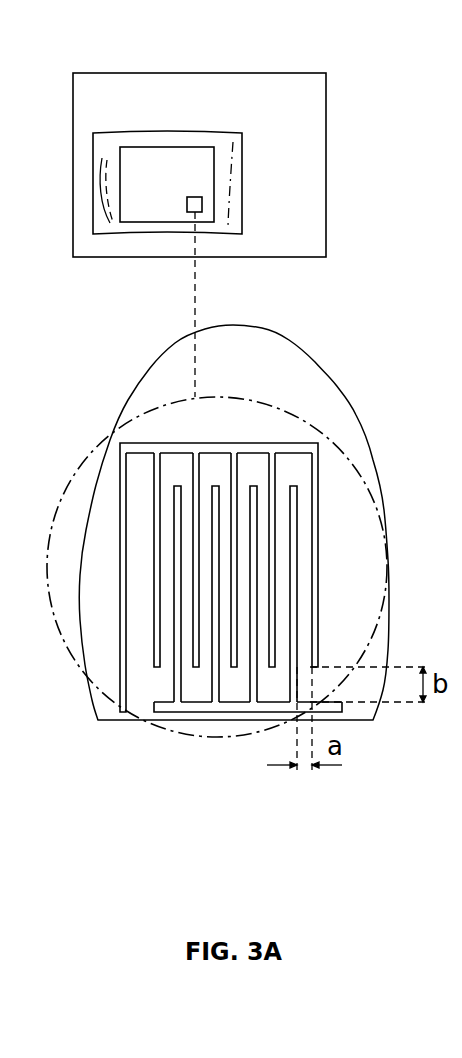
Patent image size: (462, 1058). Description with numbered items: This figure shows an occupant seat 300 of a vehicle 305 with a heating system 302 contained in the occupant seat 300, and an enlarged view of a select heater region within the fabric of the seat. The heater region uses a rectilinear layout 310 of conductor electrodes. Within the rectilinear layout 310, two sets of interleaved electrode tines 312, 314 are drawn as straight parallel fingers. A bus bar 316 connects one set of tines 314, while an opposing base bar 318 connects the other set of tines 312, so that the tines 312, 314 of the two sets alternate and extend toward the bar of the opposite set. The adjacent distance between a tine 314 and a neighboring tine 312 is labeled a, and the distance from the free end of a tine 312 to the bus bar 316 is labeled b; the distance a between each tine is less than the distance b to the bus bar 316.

The occupant seat 300 is at (243, 200).
The heating system 302 is at (217, 194).
The vehicle 305 is at (265, 73).
The rectilinear layout 310 is at (195, 212).
The tines 312 is at (236, 577).
The tines 314 is at (293, 545).
The bus bar 316 is at (193, 443).
The opposing base bar 318 is at (125, 451).